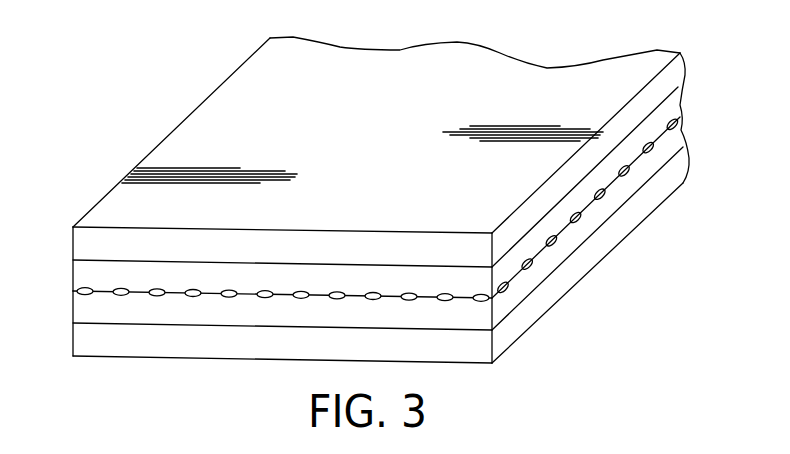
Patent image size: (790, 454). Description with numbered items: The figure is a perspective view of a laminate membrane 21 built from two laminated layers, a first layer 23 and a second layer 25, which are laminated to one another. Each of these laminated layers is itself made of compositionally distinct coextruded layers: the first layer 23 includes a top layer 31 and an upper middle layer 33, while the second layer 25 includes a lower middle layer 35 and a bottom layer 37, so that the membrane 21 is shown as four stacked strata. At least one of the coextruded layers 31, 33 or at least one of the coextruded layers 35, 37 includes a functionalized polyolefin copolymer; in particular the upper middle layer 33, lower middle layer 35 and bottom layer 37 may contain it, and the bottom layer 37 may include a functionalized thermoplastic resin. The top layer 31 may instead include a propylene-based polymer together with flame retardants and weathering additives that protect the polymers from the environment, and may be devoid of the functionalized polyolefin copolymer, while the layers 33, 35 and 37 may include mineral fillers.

The membrane 21 is at (632, 292).
The first layer 23 is at (70, 227).
The second layer 25 is at (70, 291).
The top layer 31 is at (212, 248).
The upper middle layer 33 is at (270, 275).
The lower middle layer 35 is at (157, 312).
The bottom layer 37 is at (203, 345).